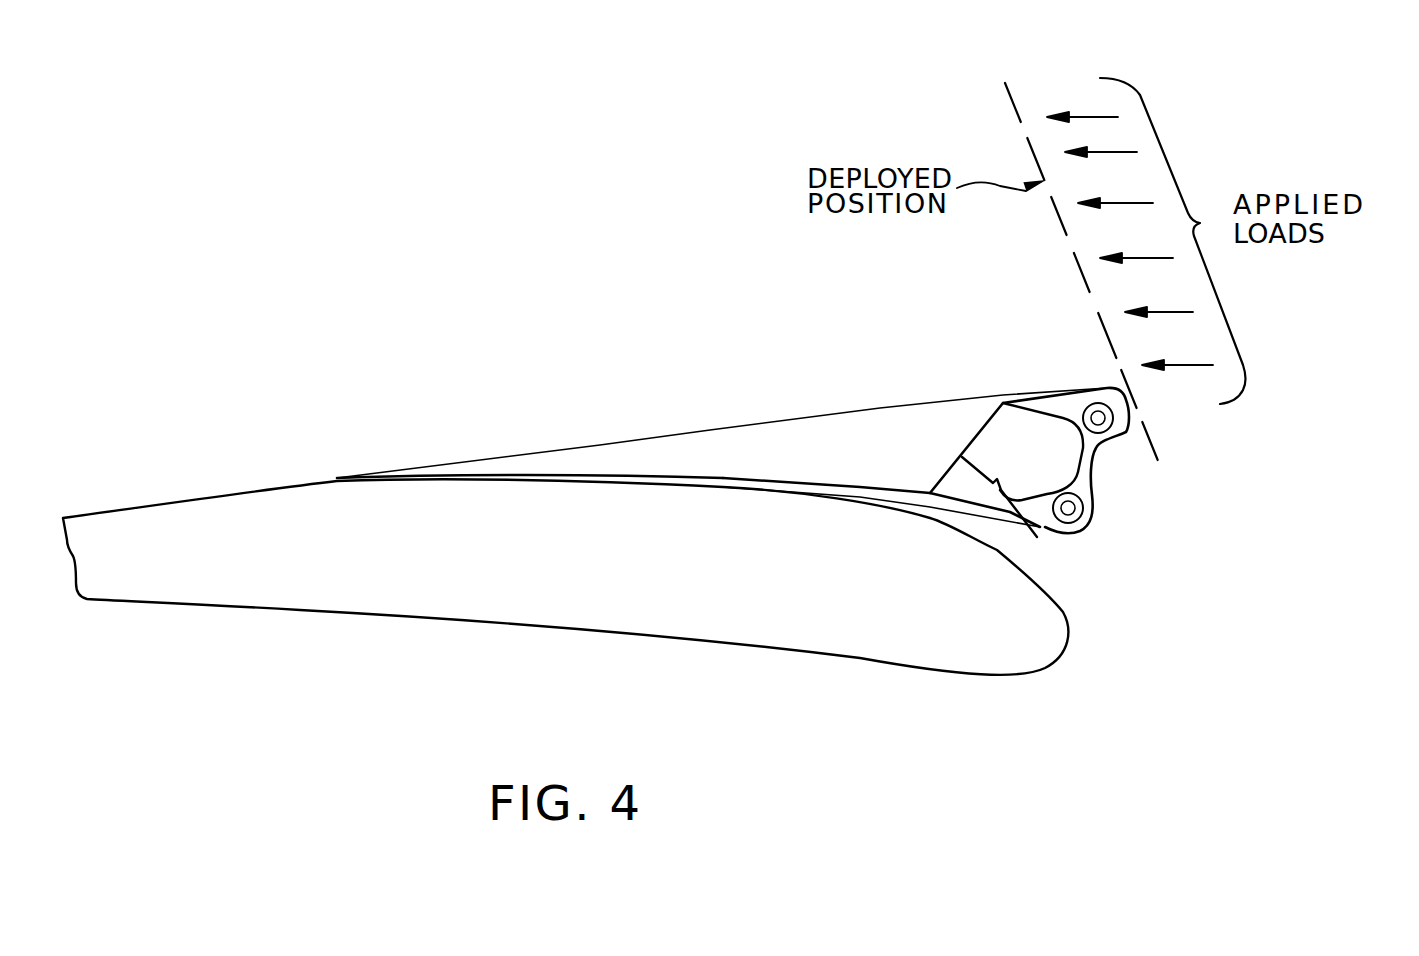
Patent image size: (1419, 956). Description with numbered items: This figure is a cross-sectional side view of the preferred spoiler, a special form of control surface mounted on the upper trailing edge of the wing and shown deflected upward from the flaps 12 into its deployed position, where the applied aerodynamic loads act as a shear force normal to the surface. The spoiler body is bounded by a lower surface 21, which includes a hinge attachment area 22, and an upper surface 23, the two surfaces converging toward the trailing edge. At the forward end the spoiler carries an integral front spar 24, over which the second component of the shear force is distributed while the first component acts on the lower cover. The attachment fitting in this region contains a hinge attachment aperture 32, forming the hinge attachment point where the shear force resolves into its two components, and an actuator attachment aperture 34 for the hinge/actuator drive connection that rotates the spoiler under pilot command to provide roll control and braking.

The flaps 12 is at (430, 498).
The lower surface 21 is at (723, 487).
The hinge attachment area 22 is at (900, 497).
The upper surface 23 is at (807, 417).
The integral front spar 24 is at (1029, 477).
The hinge attachment aperture 32 is at (1098, 418).
The actuator attachment aperture 34 is at (1068, 508).